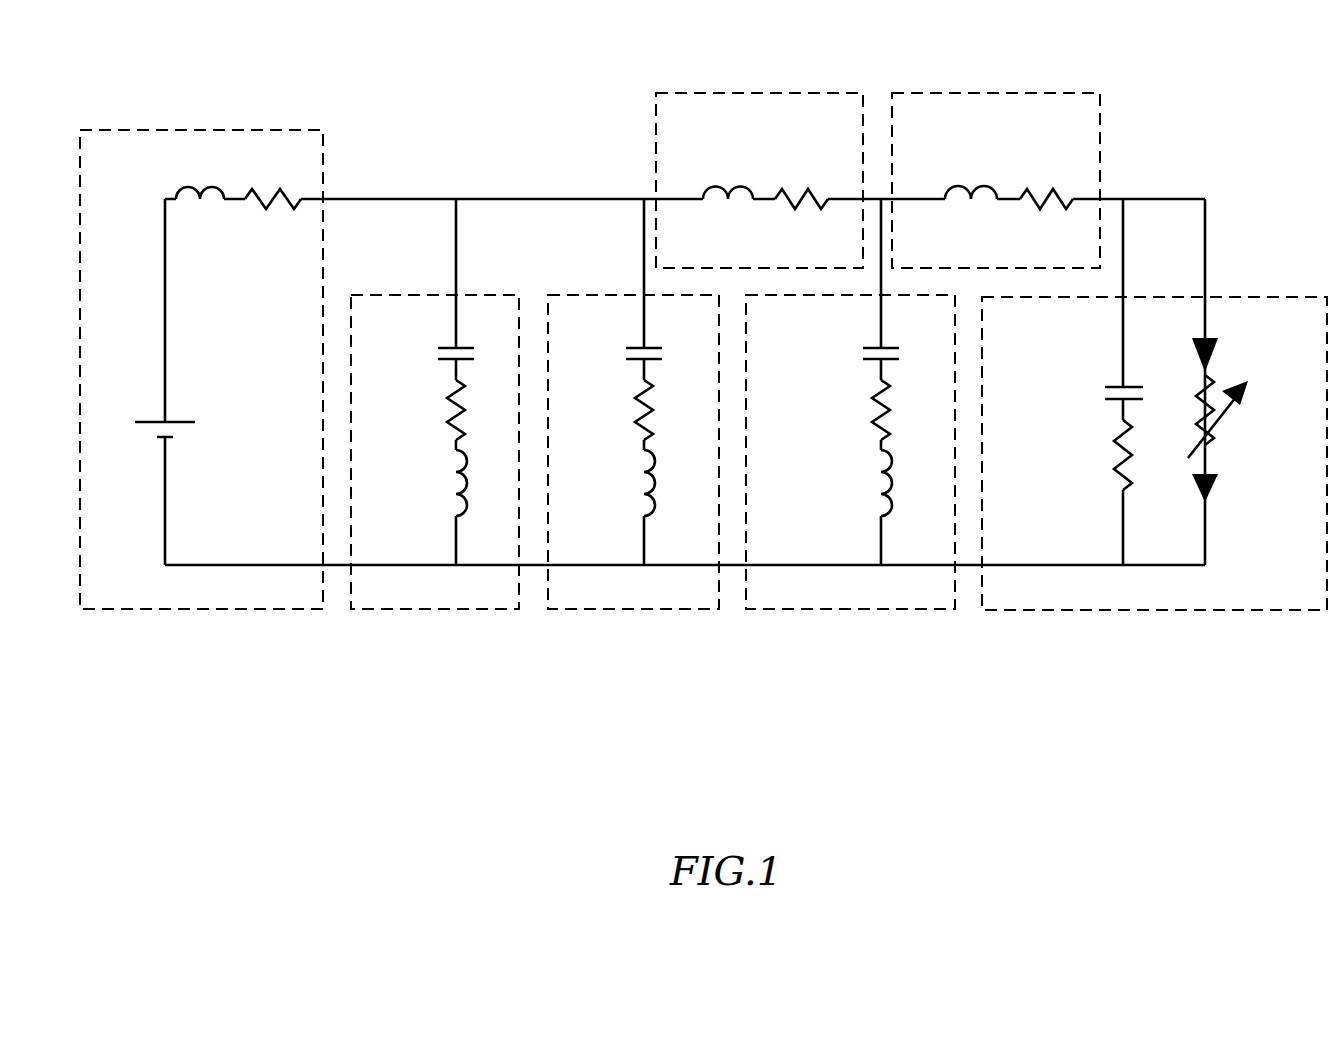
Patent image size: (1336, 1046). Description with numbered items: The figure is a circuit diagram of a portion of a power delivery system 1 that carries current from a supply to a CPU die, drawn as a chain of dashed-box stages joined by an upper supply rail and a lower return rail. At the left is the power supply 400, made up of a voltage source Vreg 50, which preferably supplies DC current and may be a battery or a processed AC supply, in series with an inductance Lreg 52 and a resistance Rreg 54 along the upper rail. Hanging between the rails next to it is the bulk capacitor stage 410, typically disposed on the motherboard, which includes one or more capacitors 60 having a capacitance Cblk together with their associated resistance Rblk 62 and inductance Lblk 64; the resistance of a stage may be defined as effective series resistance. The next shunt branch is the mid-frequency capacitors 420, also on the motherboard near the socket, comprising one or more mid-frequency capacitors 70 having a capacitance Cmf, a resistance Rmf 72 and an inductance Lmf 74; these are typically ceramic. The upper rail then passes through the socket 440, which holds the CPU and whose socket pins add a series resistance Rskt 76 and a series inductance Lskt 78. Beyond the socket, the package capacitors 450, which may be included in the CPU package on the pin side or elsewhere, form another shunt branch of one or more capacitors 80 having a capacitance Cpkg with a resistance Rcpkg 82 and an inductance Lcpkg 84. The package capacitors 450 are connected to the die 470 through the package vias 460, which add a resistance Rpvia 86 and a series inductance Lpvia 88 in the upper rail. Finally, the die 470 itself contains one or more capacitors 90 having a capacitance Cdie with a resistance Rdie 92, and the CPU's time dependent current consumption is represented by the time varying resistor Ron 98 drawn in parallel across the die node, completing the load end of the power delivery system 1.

The power delivery system 1 is at (540, 735).
The voltage source Vreg 50 is at (180, 422).
The inductance Lreg 52 is at (190, 205).
The resistance Rreg 54 is at (287, 197).
The capacitors 60 is at (465, 347).
The resistance Rblk 62 is at (468, 408).
The inductance Lblk 64 is at (472, 502).
The mid-frequency capacitors 70 is at (653, 347).
The resistance Rmf 72 is at (656, 408).
The inductance Lmf 74 is at (660, 502).
The series resistance Rskt 76 is at (812, 197).
The series inductance Lskt 78 is at (712, 205).
The capacitors 80 is at (890, 347).
The resistance Rcpkg 82 is at (893, 408).
The inductance Lcpkg 84 is at (897, 502).
The resistance Rpvia 86 is at (1057, 197).
The series inductance Lpvia 88 is at (958, 205).
The capacitors 90 is at (1133, 385).
The resistance Rdie 92 is at (1134, 453).
The time varying resistor Ron 98 is at (1212, 450).
The power supply 400 is at (183, 609).
The bulk capacitor stage 410 is at (440, 609).
The mid-frequency capacitors 420 is at (622, 609).
The socket 440 is at (767, 93).
The package capacitors 450 is at (840, 609).
The package vias 460 is at (1003, 93).
The die 470 is at (1228, 610).